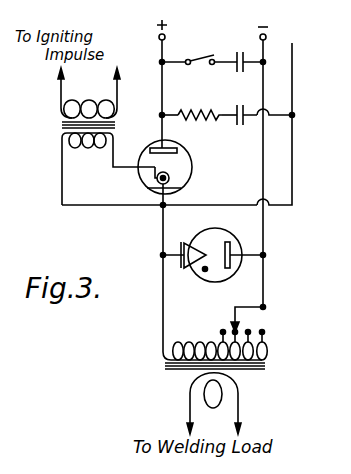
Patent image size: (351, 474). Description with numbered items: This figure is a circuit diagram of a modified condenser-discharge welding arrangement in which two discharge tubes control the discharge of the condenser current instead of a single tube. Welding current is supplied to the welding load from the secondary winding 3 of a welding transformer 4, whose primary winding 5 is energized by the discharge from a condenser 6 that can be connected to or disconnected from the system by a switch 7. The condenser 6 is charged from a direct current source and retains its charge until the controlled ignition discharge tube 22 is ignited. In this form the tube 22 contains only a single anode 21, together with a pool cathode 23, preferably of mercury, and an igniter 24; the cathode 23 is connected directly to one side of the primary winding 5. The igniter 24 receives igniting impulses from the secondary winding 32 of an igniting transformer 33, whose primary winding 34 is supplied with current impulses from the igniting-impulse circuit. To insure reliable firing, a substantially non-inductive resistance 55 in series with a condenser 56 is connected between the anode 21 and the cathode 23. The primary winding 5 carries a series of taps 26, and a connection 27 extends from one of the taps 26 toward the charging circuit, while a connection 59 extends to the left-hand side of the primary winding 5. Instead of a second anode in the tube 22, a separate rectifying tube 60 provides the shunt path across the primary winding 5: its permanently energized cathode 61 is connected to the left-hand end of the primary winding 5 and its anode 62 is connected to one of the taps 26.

The secondary winding 3 is at (215, 396).
The welding transformer 4 is at (195, 388).
The primary winding 5 is at (172, 349).
The condenser 6 is at (244, 52).
The switch 7 is at (206, 57).
The anode 21 is at (177, 150).
The controlled ignition discharge tube 22 is at (172, 166).
The pool cathode 23 is at (183, 167).
The igniter 24 is at (170, 178).
The taps 26 is at (223, 330).
The connection 27 is at (266, 232).
The secondary winding 32 is at (88, 149).
The igniting transformer 33 is at (89, 136).
The primary winding 34 is at (91, 100).
The non-inductive resistance 55 is at (215, 109).
The condenser 56 is at (247, 96).
The connection 59 is at (292, 160).
The rectifying tube 60 is at (213, 259).
The cathode 61 is at (198, 269).
The anode 62 is at (233, 246).